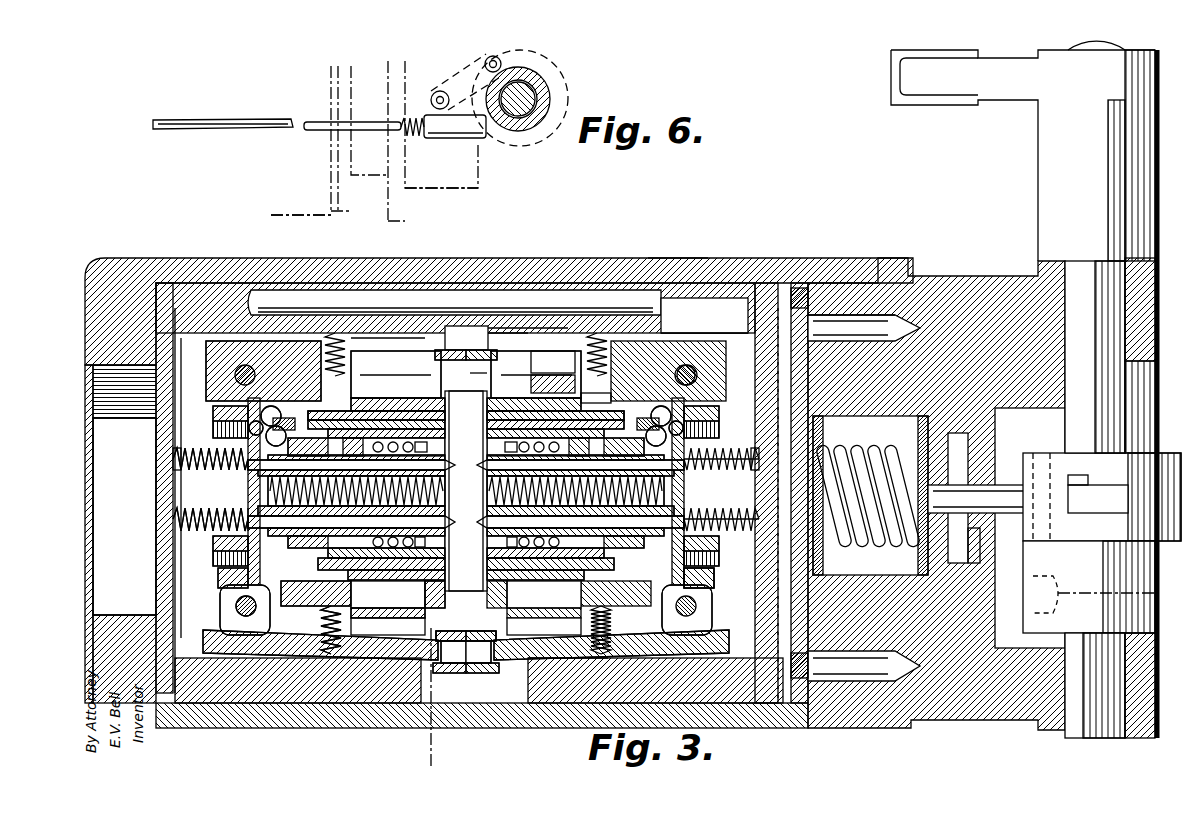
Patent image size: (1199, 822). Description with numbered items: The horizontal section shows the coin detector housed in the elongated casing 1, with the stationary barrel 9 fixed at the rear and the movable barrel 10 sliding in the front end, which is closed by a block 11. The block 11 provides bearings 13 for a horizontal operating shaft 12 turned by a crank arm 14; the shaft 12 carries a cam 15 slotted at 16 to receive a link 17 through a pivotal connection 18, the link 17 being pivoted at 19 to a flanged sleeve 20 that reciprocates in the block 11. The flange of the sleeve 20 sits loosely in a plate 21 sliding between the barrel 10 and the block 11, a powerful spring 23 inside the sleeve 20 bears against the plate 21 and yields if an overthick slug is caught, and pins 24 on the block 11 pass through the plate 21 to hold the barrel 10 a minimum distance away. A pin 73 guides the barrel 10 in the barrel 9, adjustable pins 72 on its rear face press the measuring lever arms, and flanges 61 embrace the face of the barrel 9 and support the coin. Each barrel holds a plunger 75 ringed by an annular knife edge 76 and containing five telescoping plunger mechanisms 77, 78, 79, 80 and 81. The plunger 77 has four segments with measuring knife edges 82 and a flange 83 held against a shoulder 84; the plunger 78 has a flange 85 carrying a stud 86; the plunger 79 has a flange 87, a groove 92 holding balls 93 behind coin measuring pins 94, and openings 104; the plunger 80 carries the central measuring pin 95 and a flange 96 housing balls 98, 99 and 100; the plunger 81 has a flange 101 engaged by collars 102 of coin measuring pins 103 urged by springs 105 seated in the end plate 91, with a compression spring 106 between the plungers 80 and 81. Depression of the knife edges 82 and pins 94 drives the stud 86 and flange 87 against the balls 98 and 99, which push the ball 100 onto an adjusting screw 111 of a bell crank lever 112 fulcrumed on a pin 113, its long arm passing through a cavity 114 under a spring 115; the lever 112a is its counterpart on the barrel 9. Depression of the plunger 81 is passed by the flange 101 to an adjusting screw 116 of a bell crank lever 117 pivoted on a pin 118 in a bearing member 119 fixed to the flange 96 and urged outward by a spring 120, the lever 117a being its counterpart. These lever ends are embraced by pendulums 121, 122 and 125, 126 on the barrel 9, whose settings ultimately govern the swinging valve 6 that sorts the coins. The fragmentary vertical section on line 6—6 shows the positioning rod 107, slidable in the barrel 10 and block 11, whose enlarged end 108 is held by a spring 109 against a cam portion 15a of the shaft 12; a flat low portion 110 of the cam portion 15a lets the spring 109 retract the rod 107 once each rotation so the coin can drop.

In FIG. 3, the casing 1 is at (668, 255).
In FIG. 3, the swinging valve 6 is at (803, 690).
In FIG. 3, the stationary barrel 9 is at (290, 680).
In FIG. 3, the movable barrel 10 is at (547, 692).
In FIG. 6, the movable barrel 10 is at (297, 203).
In FIG. 3, the block 11 is at (957, 273).
In FIG. 6, the block 11 is at (467, 173).
In FIG. 3, the operating shaft 12 is at (1100, 667).
In FIG. 6, the operating shaft 12 is at (533, 73).
In FIG. 3, the bearings 13 is at (1138, 300).
In FIG. 3, the crank arm 14 is at (990, 78).
In FIG. 3, the cam 15 is at (1170, 480).
In FIG. 3, the cam portion 15a is at (1145, 558).
In FIG. 6, the cam portion 15a is at (547, 88).
In FIG. 3, the slot 16 is at (1120, 477).
In FIG. 3, the link 17 is at (1067, 475).
In FIG. 3, the pivotal connection 18 is at (1033, 445).
In FIG. 3, the pivotal connection 19 is at (967, 540).
In FIG. 3, the flanged sleeve 20 is at (927, 455).
In FIG. 3, the plate 21 is at (820, 333).
In FIG. 3, the spring 23 is at (905, 490).
In FIG. 3, the pins 24 is at (795, 300).
In FIG. 3, the flanges 61 is at (466, 495).
In FIG. 3, the adjustable pins 72 is at (536, 486).
In FIG. 3, the pin 73 is at (440, 310).
In FIG. 3, the plunger 75 is at (140, 348).
In FIG. 3, the annular knife edges 76 is at (483, 569).
In FIG. 3, the plunger 77 is at (483, 556).
In FIG. 3, the plunger 78 is at (466, 452).
In FIG. 3, the plunger mechanism 79 is at (482, 368).
In FIG. 3, the plunger 80 is at (483, 474).
In FIG. 3, the plunger 81 is at (163, 470).
In FIG. 3, the measuring knife edge 82 is at (483, 542).
In FIG. 3, the annular flange 83 is at (622, 385).
In FIG. 3, the shoulder 84 is at (446, 496).
In FIG. 3, the annular flange 85 is at (465, 498).
In FIG. 3, the stud 86 is at (545, 394).
In FIG. 3, the annular flange 87 is at (477, 515).
In FIG. 3, the plate 91 is at (135, 267).
In FIG. 3, the annular groove 92 is at (388, 604).
In FIG. 3, the balls 93 is at (420, 593).
In FIG. 3, the coin measuring pins 94 is at (483, 525).
In FIG. 3, the central measuring pin 95 is at (483, 489).
In FIG. 3, the flange 96 is at (240, 440).
In FIG. 3, the ball 98 is at (466, 416).
In FIG. 3, the ball 99 is at (466, 436).
In FIG. 3, the ball 100 is at (466, 426).
In FIG. 3, the flange 101 is at (245, 494).
In FIG. 3, the collars 102 is at (465, 551).
In FIG. 3, the coin measuring pins 103 is at (483, 507).
In FIG. 3, the openings 104 is at (481, 460).
In FIG. 3, the springs 105 is at (160, 505).
In FIG. 3, the compression spring 106 is at (245, 480).
In FIG. 6, the rod 107 is at (227, 117).
In FIG. 6, the enlarged front end 108 is at (438, 130).
In FIG. 6, the spring 109 is at (397, 110).
In FIG. 6, the flat low portion 110 is at (503, 52).
In FIG. 3, the adjusting screw 111 is at (464, 420).
In FIG. 3, the bell crank lever 112 is at (680, 330).
In FIG. 3, the bell crank lever 112a is at (372, 332).
In FIG. 3, the pin 113 is at (233, 365).
In FIG. 3, the elongated cavity 114 is at (553, 372).
In FIG. 3, the spring 115 is at (330, 325).
In FIG. 3, the adjusting screw 116 is at (716, 578).
In FIG. 3, the bell crank lever 117 is at (623, 645).
In FIG. 3, the bell crank lever 117a is at (452, 660).
In FIG. 3, the pin 118 is at (213, 580).
In FIG. 3, the bearing member 119 is at (213, 597).
In FIG. 3, the spring 120 is at (323, 645).
In FIG. 3, the pendulum 121 is at (475, 310).
In FIG. 3, the pendulum 122 is at (512, 318).
In FIG. 3, the pendulum 125 is at (463, 660).
In FIG. 3, the pendulum 126 is at (483, 642).